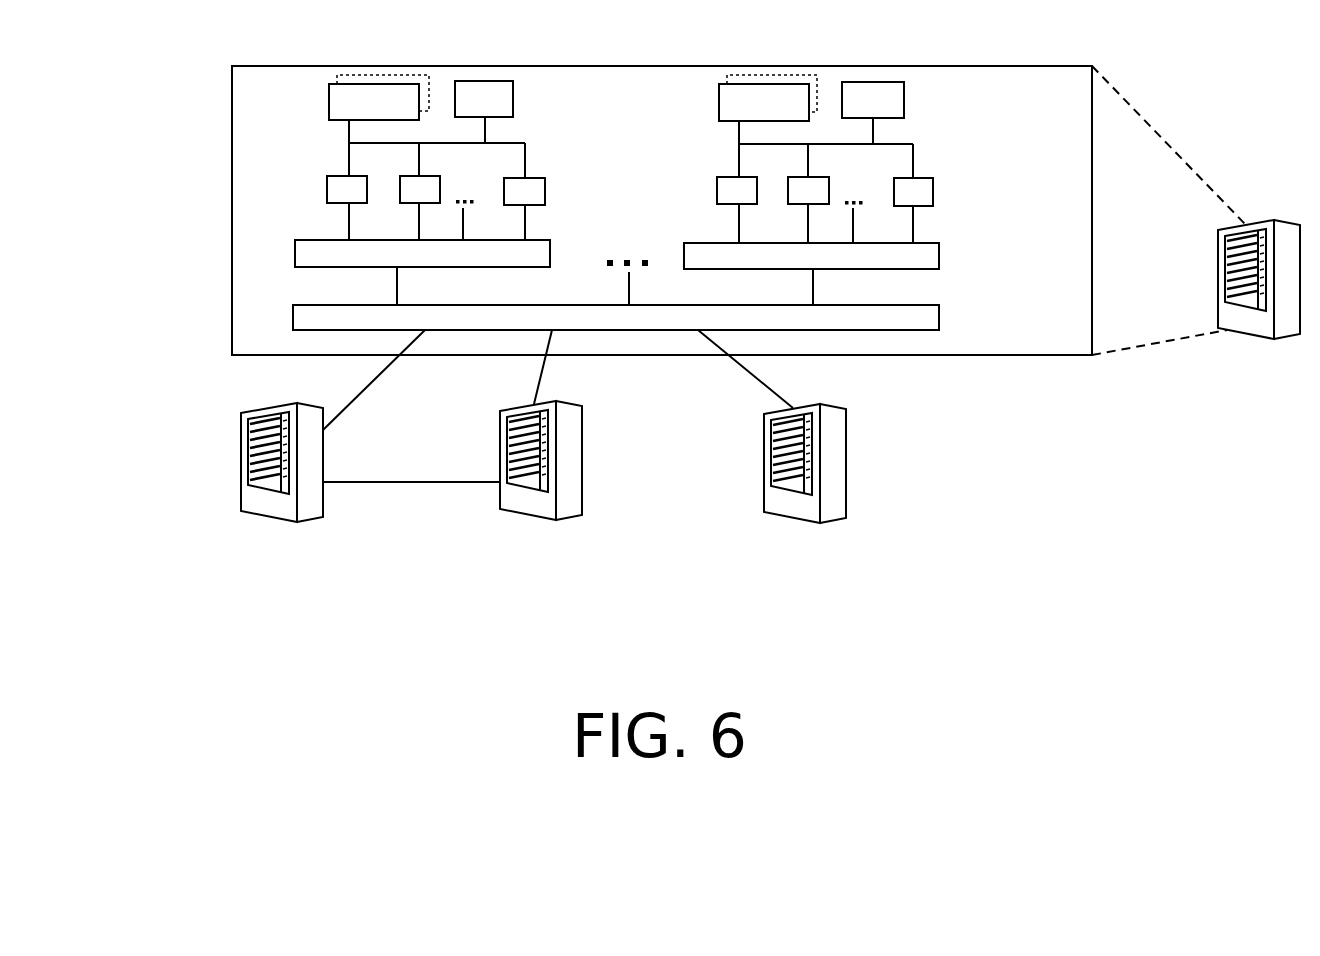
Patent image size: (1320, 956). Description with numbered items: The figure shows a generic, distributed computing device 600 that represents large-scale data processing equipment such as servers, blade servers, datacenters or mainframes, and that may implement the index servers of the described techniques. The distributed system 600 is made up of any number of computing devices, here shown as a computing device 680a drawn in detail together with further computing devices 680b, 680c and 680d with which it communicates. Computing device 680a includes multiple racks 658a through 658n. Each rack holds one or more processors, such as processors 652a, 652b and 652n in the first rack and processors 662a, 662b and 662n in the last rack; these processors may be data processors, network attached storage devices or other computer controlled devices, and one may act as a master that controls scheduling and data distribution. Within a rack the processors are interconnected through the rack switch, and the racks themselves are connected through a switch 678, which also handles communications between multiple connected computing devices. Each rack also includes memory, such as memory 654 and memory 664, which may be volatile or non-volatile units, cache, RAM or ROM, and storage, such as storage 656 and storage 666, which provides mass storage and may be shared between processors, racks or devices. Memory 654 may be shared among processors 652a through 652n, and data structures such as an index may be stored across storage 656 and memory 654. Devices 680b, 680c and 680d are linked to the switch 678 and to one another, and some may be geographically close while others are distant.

The computing device 600 is at (222, 48).
The memory 654 is at (379, 97).
The storage 656 is at (484, 99).
The processor 652a is at (327, 190).
The processor 652b is at (440, 188).
The processor 652n is at (545, 190).
The rack 658a is at (422, 253).
The memory 664 is at (768, 98).
The storage 666 is at (873, 100).
The processor 662a is at (717, 190).
The processor 662b is at (829, 188).
The processor 662n is at (933, 192).
The rack 658n is at (811, 256).
The switch 678 is at (616, 318).
The computing device 680a is at (1217, 260).
The computing device 680b is at (240, 454).
The computing device 680c is at (500, 449).
The computing device 680d is at (764, 477).